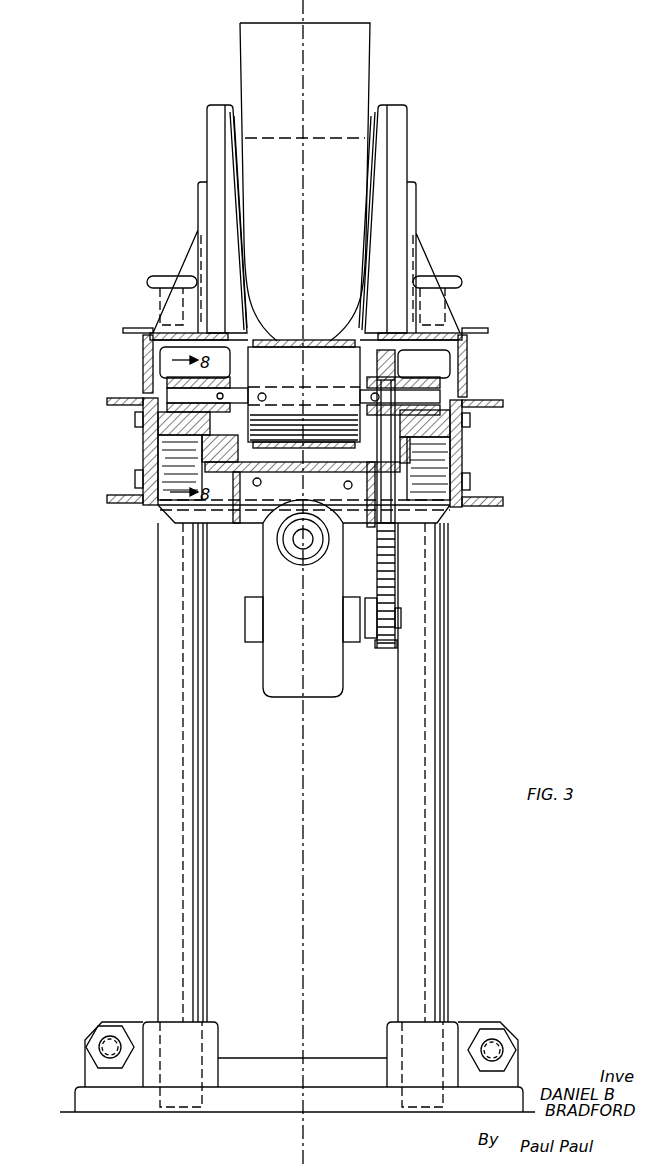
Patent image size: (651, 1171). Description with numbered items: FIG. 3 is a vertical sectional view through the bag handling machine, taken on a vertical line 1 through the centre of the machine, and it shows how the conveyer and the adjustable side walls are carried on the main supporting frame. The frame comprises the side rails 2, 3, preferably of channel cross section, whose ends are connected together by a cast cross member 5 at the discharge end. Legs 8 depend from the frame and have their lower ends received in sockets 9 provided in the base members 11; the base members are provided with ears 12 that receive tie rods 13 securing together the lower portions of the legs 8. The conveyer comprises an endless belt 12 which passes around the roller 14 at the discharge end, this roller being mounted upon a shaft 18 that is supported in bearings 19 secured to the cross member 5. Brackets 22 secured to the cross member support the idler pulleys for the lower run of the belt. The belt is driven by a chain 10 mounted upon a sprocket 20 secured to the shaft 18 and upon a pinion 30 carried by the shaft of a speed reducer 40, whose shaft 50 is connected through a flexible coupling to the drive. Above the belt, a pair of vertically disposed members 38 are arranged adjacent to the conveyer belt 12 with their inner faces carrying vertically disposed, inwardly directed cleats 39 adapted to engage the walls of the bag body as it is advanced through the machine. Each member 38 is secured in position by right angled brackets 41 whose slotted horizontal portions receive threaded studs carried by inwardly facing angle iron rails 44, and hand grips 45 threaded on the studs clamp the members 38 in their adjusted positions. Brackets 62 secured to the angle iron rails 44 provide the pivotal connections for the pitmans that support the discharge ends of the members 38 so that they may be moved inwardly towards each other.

The section line / axis 1 is at (311, 584).
The side rail 2 is at (108, 400).
The side rail 3 is at (502, 498).
The cross member 5 is at (177, 517).
The legs 8 is at (175, 745).
The sockets 9 is at (203, 1050).
The chain 10 is at (393, 578).
The base members 11 is at (279, 1066).
The endless belt 12 is at (280, 341).
The roller 13 is at (105, 1048).
The roller 14 is at (318, 362).
The shaft 18 is at (442, 395).
The bearings 19 is at (167, 377).
The sprocket 20 is at (397, 368).
The brackets 22 is at (236, 455).
The pinion 30 is at (388, 650).
The vertically disposed members 38 is at (215, 117).
The cleats 39 is at (377, 192).
The speed reducer 40 is at (290, 685).
The right angled brackets 41 is at (415, 202).
The angle iron rails 44 is at (147, 340).
The hand grips 45 is at (160, 275).
The shaft 50 is at (298, 543).
The brackets 62 is at (163, 343).